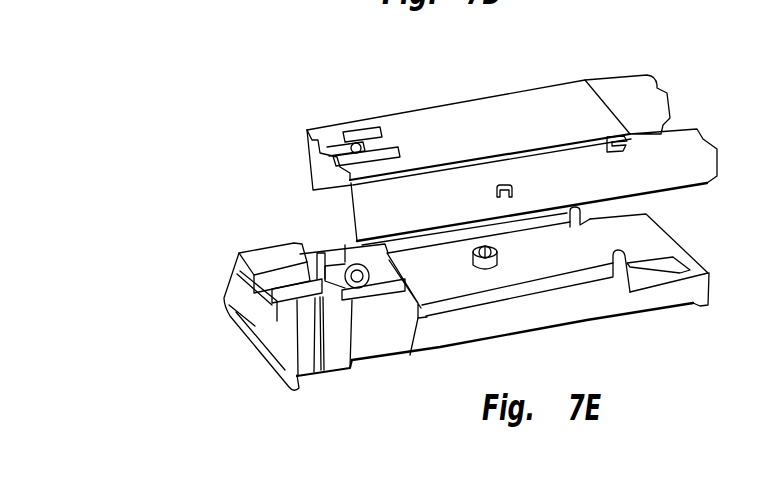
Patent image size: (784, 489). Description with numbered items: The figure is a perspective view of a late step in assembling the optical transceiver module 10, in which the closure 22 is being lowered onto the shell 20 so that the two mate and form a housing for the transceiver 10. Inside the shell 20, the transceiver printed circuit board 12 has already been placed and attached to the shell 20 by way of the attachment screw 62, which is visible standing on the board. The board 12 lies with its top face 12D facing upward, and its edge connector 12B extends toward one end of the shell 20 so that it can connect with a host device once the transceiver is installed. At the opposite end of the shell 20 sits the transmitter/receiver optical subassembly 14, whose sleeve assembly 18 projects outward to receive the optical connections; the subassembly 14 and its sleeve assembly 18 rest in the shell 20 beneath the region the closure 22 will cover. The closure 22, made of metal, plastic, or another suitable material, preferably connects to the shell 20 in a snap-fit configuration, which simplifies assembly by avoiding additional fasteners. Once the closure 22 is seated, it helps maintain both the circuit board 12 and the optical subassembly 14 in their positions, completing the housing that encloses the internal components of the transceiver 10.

The optical transceiver module 10 is at (614, 32).
The transceiver printed circuit board 12 is at (538, 277).
The edge connector 12B is at (657, 233).
The top face 12D is at (576, 261).
The transmitter/receiver optical subassembly 14 is at (323, 227).
The sleeve assembly 18 is at (336, 241).
The shell 20 is at (597, 305).
The closure 22 is at (453, 112).
The attachment screw 62 is at (487, 268).